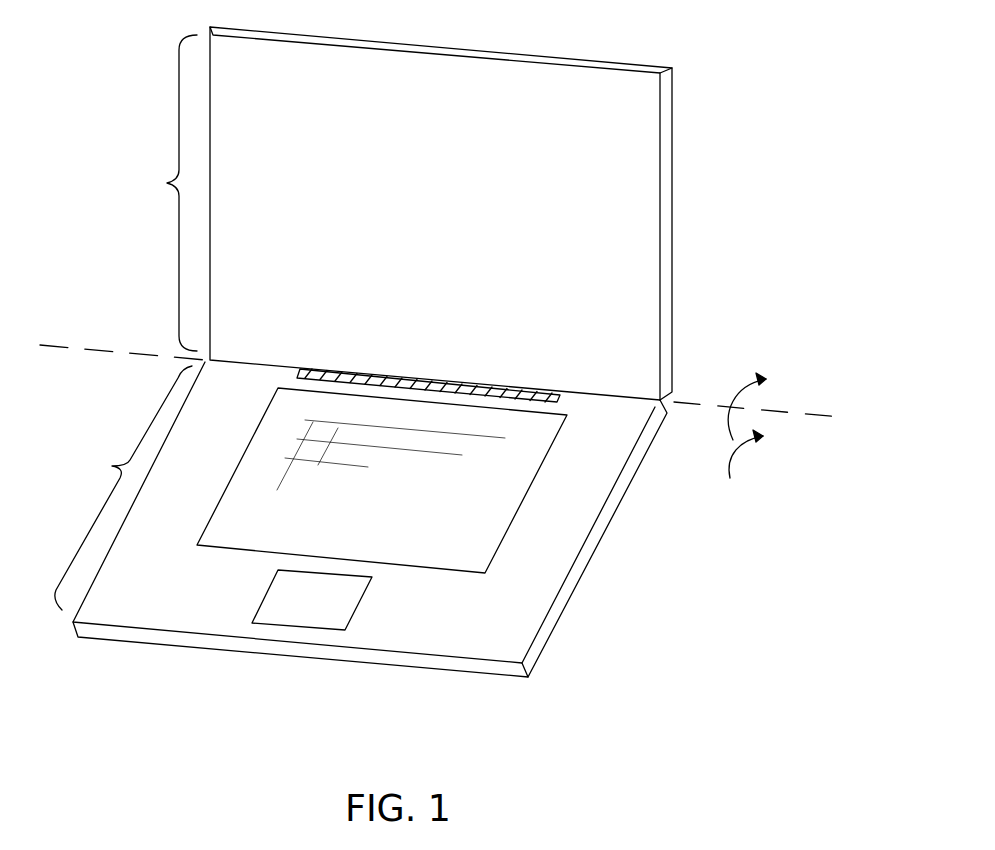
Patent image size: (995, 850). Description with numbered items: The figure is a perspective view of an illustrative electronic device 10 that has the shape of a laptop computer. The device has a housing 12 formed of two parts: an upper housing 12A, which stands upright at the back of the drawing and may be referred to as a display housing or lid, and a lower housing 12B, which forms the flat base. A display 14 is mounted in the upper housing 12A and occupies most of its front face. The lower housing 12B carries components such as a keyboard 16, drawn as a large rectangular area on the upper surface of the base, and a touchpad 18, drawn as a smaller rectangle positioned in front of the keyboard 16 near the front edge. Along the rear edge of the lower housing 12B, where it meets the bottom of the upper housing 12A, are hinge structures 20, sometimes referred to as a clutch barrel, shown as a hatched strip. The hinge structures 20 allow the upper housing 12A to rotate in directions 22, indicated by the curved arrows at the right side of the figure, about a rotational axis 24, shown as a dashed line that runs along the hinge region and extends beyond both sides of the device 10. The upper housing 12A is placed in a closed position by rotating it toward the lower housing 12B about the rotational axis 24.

The electronic device 10 is at (443, 373).
The housing 12 is at (481, 213).
The upper housing 12A is at (155, 193).
The lower housing 12B is at (379, 541).
The display 14 is at (582, 205).
The keyboard 16 is at (523, 498).
The touchpad 18 is at (355, 610).
The hinge structures 20 is at (540, 390).
The directions 22 is at (742, 437).
The rotational axis 24 is at (98, 348).